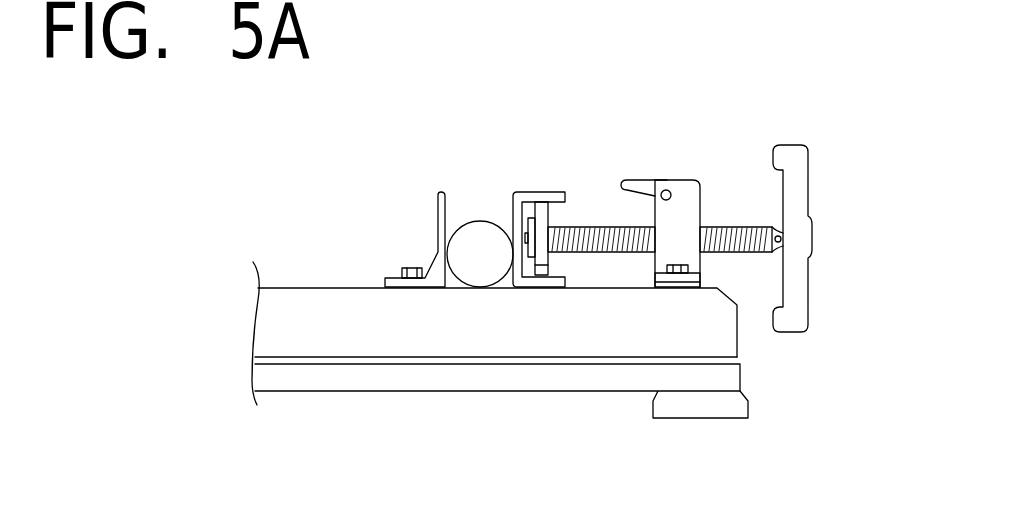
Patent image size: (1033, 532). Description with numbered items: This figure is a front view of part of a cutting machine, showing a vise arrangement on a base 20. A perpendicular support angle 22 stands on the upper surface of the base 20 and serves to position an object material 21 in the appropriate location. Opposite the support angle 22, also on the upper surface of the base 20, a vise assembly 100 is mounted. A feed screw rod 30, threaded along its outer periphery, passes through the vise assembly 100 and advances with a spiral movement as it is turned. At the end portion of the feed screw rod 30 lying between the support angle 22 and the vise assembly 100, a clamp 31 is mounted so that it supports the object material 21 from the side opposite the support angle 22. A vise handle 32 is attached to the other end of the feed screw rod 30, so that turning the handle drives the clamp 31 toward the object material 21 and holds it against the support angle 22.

The base 20 is at (712, 338).
The object material 21 is at (484, 235).
The perpendicular support angle 22 is at (438, 217).
The feed screw rod 30 is at (598, 240).
The clamp 31 is at (540, 190).
The vise handle 32 is at (802, 248).
The vise assembly 100 is at (688, 172).